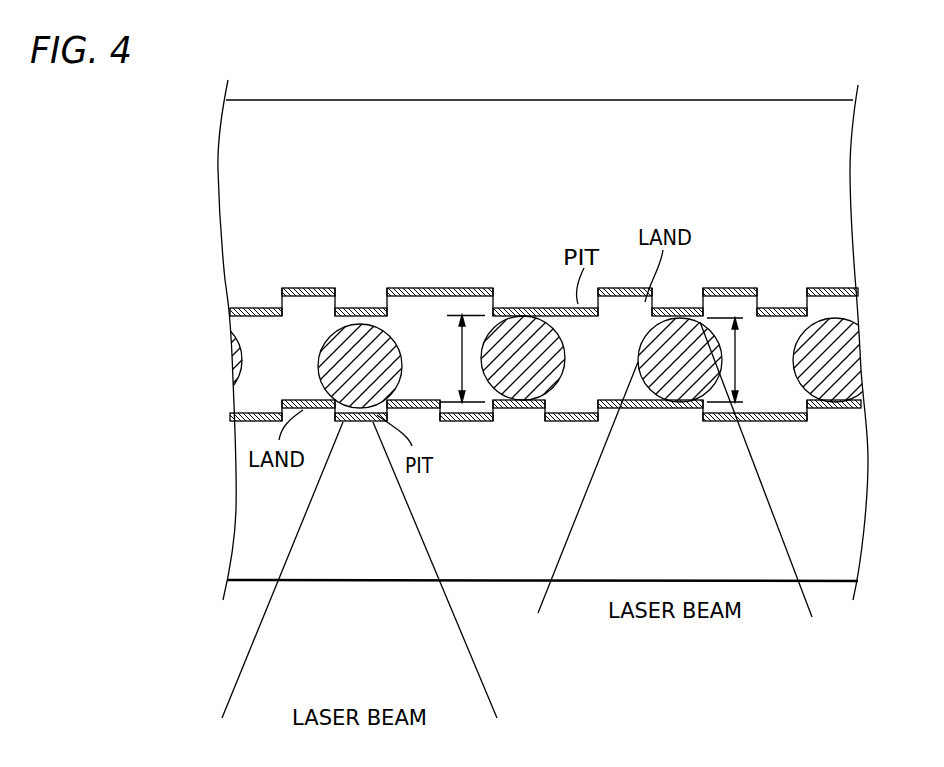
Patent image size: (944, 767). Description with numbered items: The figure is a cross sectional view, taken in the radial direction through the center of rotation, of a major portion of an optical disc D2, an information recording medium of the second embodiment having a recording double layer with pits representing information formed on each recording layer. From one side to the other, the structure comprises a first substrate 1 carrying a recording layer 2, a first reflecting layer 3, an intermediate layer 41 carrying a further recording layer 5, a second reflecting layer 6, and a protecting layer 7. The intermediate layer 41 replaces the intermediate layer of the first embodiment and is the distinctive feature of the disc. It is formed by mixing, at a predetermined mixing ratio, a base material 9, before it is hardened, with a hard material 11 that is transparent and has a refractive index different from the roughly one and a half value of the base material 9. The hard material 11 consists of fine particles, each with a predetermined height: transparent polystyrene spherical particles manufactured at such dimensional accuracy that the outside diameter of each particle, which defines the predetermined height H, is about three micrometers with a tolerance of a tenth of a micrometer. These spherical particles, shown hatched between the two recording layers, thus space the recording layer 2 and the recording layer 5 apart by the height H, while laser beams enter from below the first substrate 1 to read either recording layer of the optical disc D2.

The first substrate 1 is at (853, 527).
The recording layer 2 is at (847, 410).
The first reflecting layer 3 is at (860, 392).
The recording layer 5 is at (848, 296).
The second reflecting layer 6 is at (850, 284).
The protecting layer 7 is at (836, 172).
The base material 9 is at (292, 328).
The hard material 11 is at (385, 345).
The intermediate layer 41 is at (200, 344).
The optical disc D2 is at (662, 90).